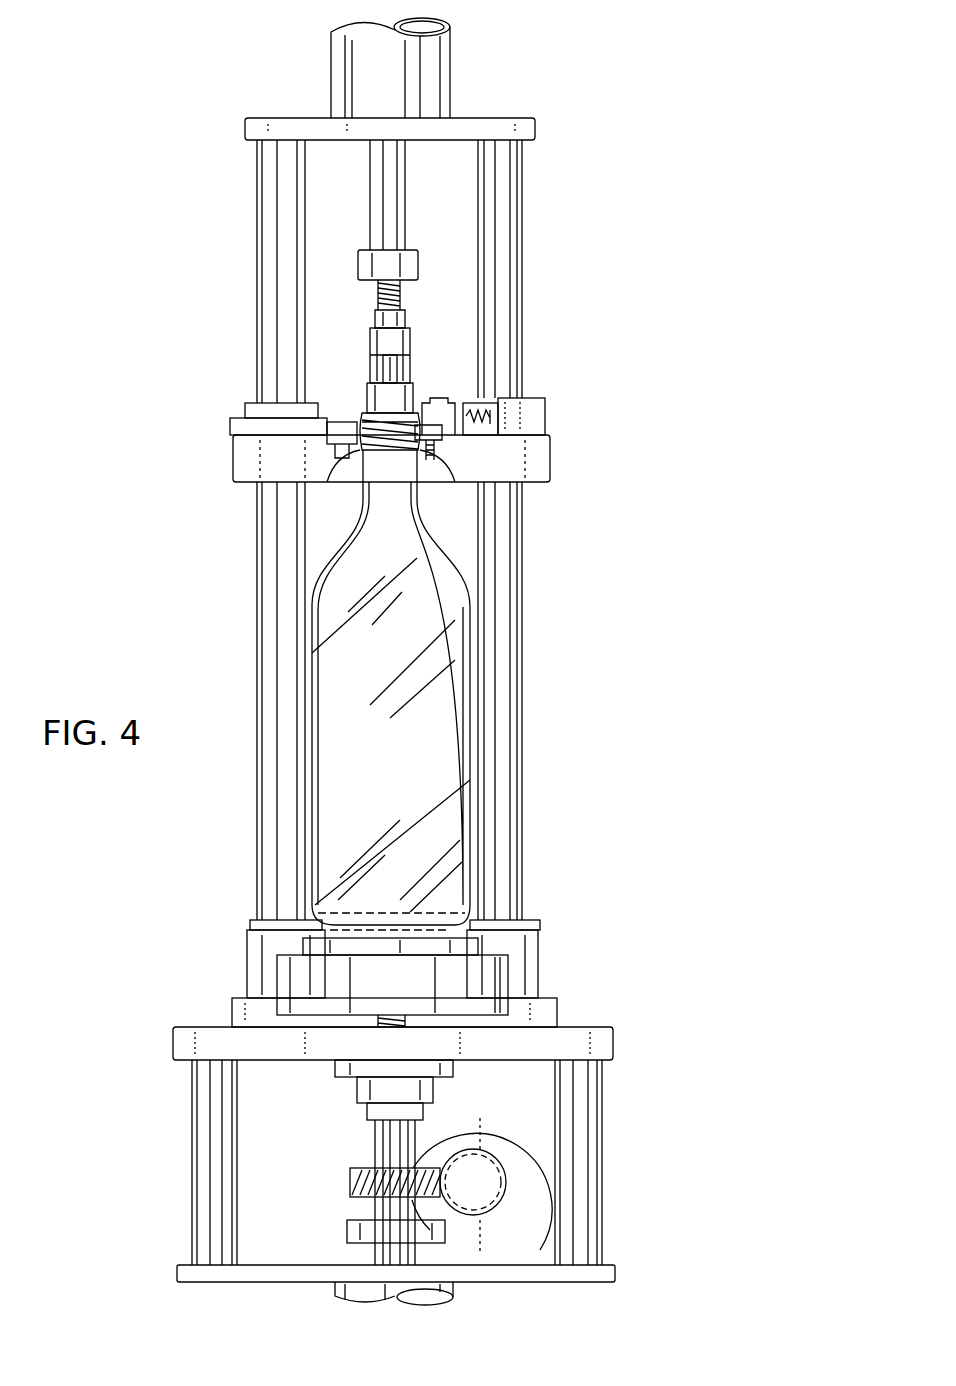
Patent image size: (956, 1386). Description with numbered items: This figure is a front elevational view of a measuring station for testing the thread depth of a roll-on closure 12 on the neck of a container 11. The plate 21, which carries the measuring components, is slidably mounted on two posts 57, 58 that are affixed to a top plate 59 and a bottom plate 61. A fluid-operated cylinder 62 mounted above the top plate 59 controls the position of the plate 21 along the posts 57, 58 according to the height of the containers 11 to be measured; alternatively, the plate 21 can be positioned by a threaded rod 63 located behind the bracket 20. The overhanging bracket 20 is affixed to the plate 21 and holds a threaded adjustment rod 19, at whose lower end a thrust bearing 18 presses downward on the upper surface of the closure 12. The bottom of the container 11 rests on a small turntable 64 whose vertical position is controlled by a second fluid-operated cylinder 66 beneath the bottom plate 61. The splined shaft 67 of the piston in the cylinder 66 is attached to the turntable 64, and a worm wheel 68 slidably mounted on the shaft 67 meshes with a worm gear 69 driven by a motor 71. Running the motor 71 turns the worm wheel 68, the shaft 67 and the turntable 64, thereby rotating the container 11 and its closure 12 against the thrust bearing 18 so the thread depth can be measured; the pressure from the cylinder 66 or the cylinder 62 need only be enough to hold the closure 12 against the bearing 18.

The container 11 is at (465, 567).
The roll-on closure 12 is at (353, 409).
The thrust bearing 18 is at (413, 398).
The threaded adjustment rod 19 is at (383, 368).
The overhanging bracket 20 is at (410, 346).
The plate 21 is at (233, 463).
The post 57 is at (522, 245).
The post 58 is at (262, 243).
The top plate 59 is at (515, 118).
The bottom plate 61 is at (557, 1013).
The fluid-operated cylinder 62 is at (447, 63).
The threaded rod 63 is at (402, 298).
The turntable 64 is at (510, 976).
The second fluid-operated cylinder 66 is at (455, 1290).
The shaft 67 is at (375, 1137).
The worm wheel 68 is at (350, 1183).
The worm gear 69 is at (490, 1160).
The motor 71 is at (545, 1212).